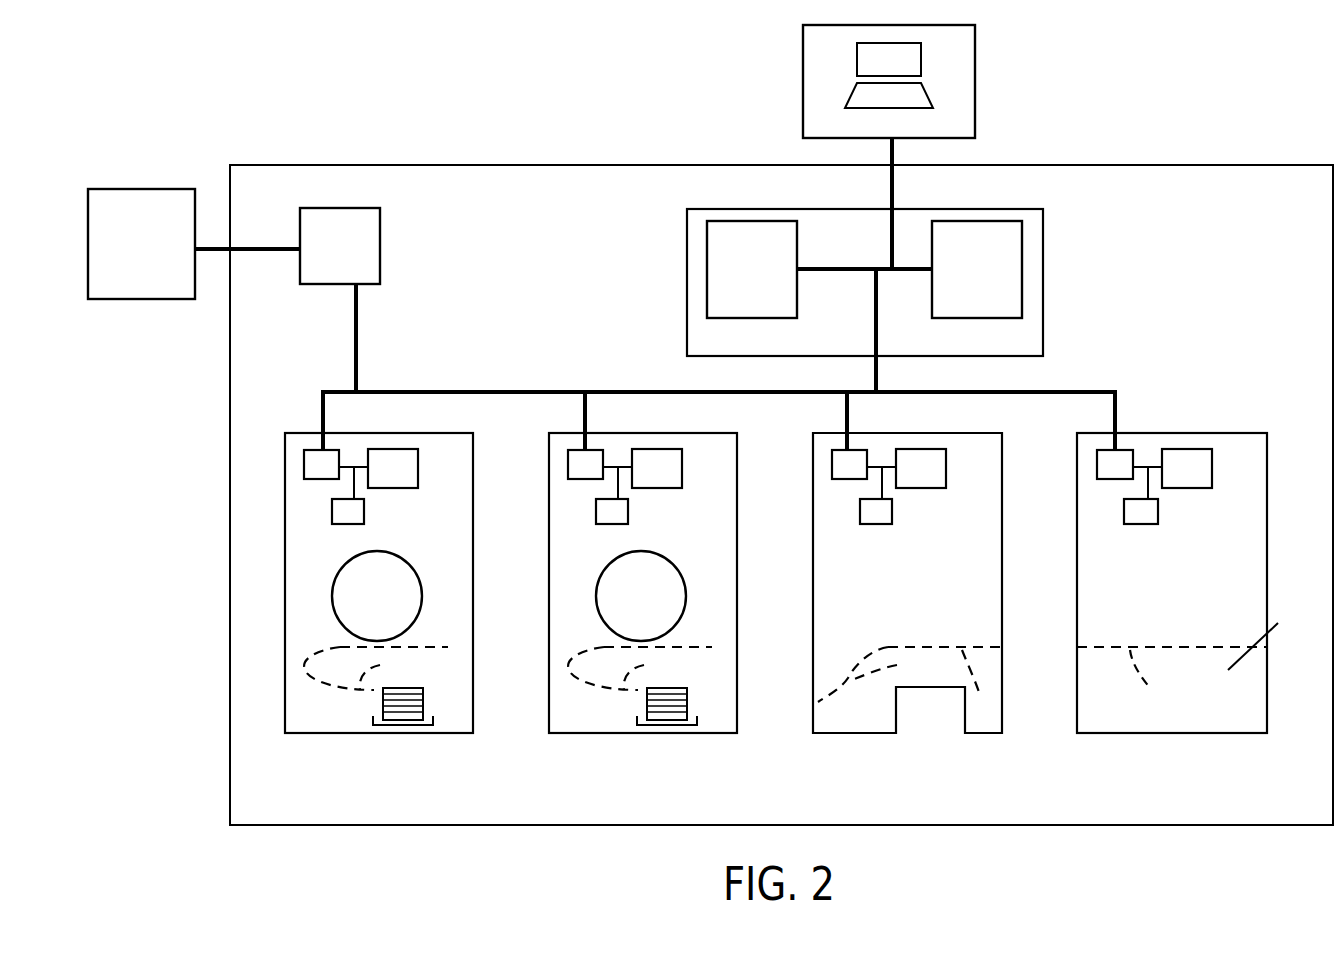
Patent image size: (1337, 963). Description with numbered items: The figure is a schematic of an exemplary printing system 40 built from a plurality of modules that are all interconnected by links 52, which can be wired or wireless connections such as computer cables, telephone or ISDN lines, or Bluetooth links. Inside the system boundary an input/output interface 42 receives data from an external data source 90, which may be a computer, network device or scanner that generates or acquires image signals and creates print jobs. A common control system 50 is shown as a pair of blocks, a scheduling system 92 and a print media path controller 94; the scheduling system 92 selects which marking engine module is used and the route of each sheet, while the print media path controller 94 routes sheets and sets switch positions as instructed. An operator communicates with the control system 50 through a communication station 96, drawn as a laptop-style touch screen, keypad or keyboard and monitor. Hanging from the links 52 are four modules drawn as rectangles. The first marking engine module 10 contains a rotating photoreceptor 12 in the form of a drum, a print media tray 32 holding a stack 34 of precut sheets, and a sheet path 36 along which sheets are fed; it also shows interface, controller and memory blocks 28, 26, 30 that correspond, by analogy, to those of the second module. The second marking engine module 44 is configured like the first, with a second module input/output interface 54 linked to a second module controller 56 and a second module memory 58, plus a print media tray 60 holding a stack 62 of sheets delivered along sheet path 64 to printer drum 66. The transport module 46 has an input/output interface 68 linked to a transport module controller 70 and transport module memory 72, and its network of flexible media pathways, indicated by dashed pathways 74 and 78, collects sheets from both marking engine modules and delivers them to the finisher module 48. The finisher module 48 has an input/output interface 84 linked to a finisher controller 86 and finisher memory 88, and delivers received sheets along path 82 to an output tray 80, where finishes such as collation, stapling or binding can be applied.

The first marking engine module 10 is at (375, 615).
The rotating photoreceptor 12 is at (350, 562).
The controller 26 is at (418, 468).
The communication interface 28 is at (304, 468).
The memory 30 is at (332, 515).
The print media tray 32 is at (388, 727).
The stack of precut print media sheets 34 is at (423, 697).
The sheet path 36 is at (376, 668).
The printing system 40 is at (175, 756).
The input/output interface 42 is at (380, 232).
The second marking engine module 44 is at (639, 614).
The transport module 46 is at (901, 614).
The finisher module 48 is at (1168, 614).
The common control system 50 is at (869, 282).
The links 52 is at (356, 360).
The second module input/output interface 54 is at (568, 468).
The second module controller 56 is at (682, 468).
The second module memory 58 is at (596, 515).
The print media tray 60 is at (652, 727).
The stack of print media sheets 62 is at (687, 697).
The sheet path 64 is at (640, 668).
The printer drum 66 is at (614, 562).
The input/output interface 68 is at (832, 468).
The transport module controller 70 is at (946, 468).
The transport module memory 72 is at (860, 515).
The material flow path 74 is at (910, 674).
The outlet path 78 is at (978, 689).
The output tray 80 is at (1240, 668).
The path 82 is at (1145, 687).
The input/output interface 84 is at (1097, 468).
The finisher controller 86 is at (1212, 468).
The finisher memory 88 is at (1124, 515).
The data source 90 is at (162, 300).
The scheduling system 92 is at (707, 272).
The print media path controller 94 is at (1022, 305).
The communication station 96 is at (975, 88).